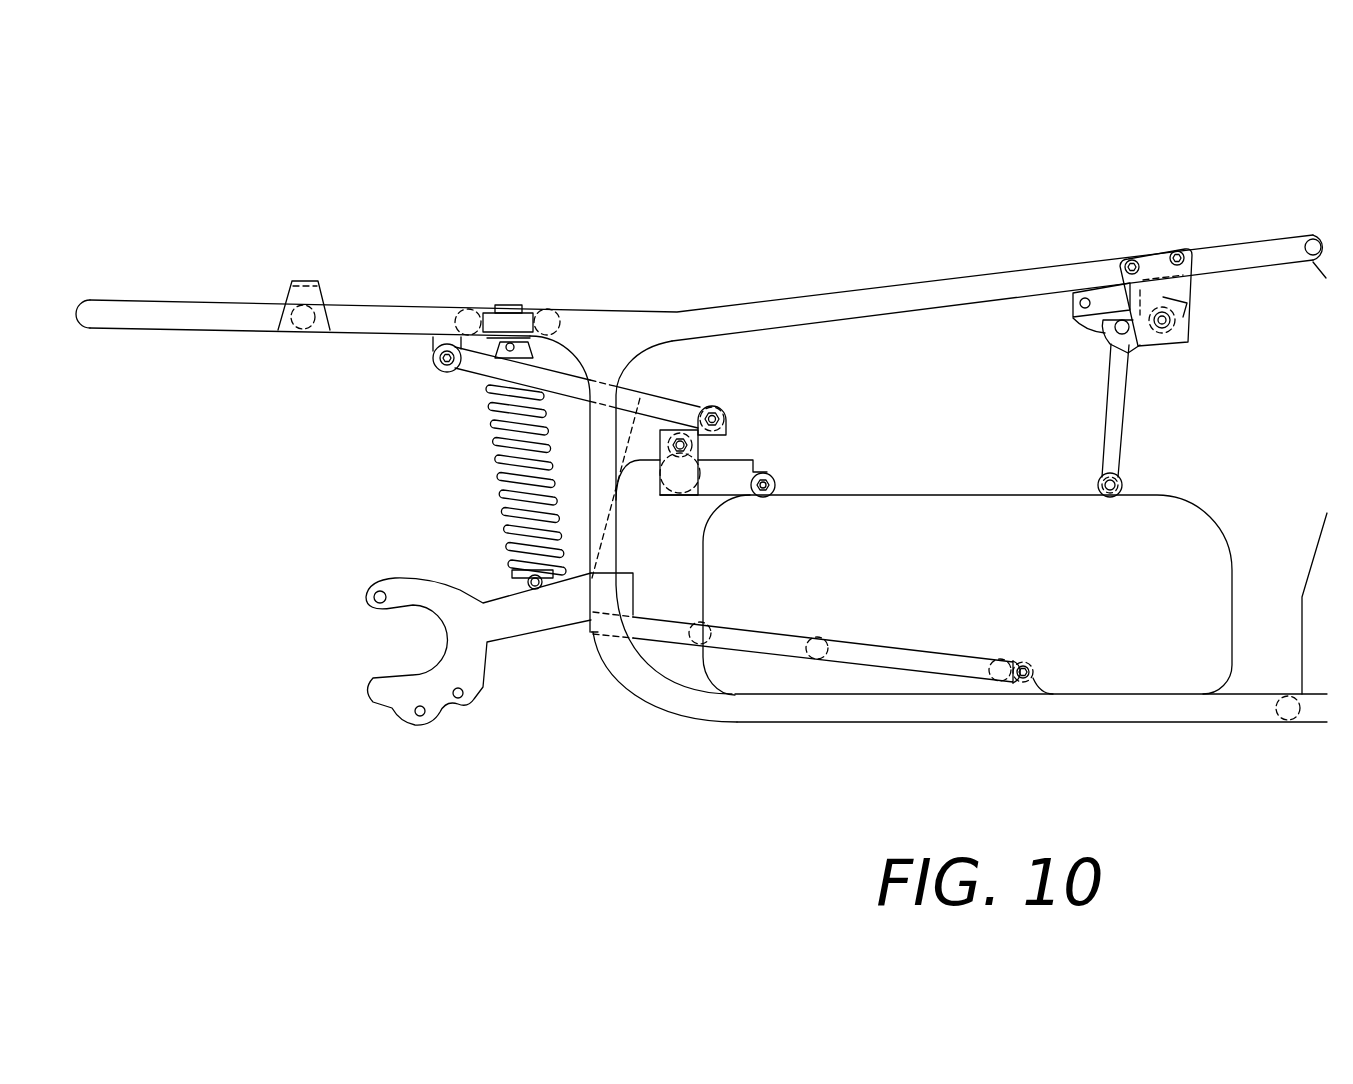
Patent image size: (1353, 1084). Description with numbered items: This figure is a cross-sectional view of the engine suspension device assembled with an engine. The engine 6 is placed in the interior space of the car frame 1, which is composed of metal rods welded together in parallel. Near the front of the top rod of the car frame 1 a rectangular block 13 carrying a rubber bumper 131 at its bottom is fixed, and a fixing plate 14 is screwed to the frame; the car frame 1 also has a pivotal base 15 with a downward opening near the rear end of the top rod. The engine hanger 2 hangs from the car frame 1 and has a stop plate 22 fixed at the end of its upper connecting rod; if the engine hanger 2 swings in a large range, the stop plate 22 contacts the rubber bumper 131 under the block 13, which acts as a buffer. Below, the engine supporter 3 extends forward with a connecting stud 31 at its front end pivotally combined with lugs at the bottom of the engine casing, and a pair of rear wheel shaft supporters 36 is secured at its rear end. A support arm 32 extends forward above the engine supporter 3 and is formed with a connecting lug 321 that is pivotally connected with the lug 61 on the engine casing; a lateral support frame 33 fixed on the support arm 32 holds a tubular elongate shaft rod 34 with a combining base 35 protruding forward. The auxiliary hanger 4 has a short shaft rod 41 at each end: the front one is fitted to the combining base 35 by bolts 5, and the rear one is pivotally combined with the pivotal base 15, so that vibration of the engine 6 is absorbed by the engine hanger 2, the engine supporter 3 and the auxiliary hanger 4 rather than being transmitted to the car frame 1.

The car frame 1 is at (907, 262).
The rectangular block 13 is at (1097, 297).
The rubber bumper 131 is at (1075, 323).
The fixing plate 14 is at (1192, 328).
The bolts 5 is at (442, 367).
The pivotal base 15 is at (428, 340).
The auxiliary hanger 4 is at (550, 377).
The short shaft rod 41 is at (432, 352).
The elongate shaft rod 34 is at (679, 432).
The combining base 35 is at (725, 431).
The lateral support frame 33 is at (718, 457).
The connecting lugs 321 is at (773, 478).
The engine 6 is at (993, 527).
The lugs 61 is at (1122, 488).
The engine hanger 2 is at (1127, 387).
The stop plate 22 is at (1103, 332).
The rear wheel shaft supporters 36 is at (528, 610).
The support arms 32 is at (633, 523).
The engine supporter 3 is at (872, 652).
The connecting stud 31 is at (1015, 687).